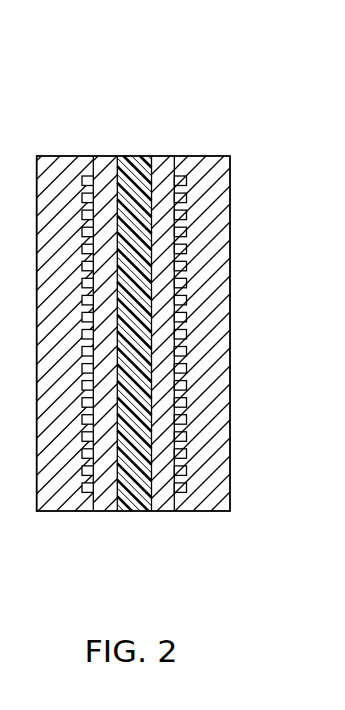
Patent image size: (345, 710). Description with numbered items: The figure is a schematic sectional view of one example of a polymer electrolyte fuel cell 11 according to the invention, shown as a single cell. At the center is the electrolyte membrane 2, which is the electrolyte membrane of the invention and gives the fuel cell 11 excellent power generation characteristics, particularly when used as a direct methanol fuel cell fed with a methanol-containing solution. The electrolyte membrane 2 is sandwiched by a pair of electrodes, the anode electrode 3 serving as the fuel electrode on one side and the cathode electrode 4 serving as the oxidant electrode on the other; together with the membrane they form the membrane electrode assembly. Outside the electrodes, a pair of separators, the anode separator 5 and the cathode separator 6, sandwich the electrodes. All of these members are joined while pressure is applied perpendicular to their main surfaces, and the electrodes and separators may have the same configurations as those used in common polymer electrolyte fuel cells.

The fuel cell 11 is at (277, 75).
The electrolyte membrane 2 is at (133, 511).
The anode electrode 3 is at (162, 168).
The cathode electrode 4 is at (102, 168).
The anode separator 5 is at (208, 168).
The cathode separator 6 is at (50, 168).